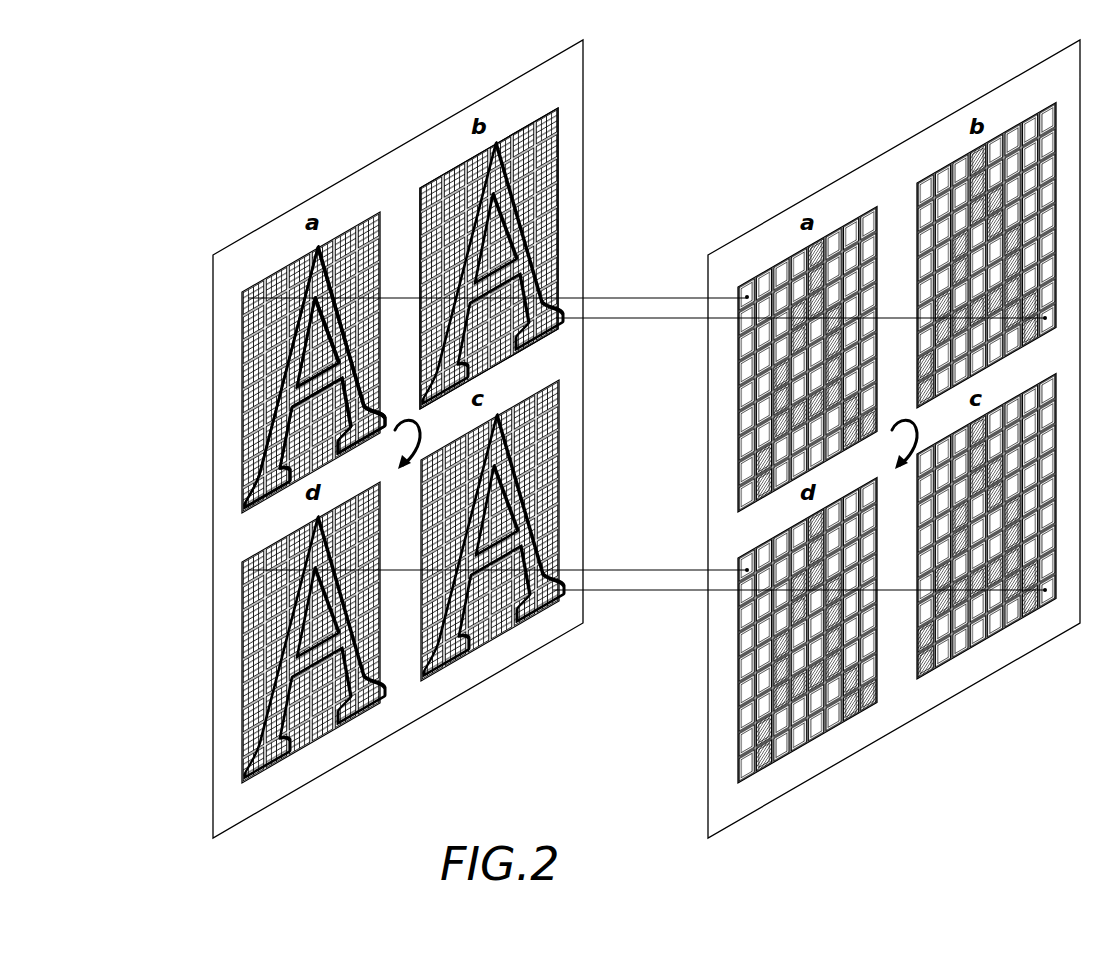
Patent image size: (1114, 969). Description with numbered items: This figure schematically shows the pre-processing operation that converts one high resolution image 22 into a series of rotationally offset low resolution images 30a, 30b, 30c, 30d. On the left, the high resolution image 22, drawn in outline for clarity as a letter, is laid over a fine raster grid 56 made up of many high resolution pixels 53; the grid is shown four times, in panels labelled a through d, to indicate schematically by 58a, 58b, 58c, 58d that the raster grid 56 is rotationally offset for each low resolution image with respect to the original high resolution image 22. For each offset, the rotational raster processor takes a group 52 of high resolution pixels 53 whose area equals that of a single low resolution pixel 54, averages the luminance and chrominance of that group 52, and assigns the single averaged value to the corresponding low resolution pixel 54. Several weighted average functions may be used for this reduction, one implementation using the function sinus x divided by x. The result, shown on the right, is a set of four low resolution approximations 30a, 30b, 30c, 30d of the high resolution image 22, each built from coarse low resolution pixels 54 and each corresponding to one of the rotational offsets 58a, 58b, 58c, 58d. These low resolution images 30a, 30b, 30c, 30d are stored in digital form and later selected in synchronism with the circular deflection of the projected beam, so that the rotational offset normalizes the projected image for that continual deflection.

The high resolution image 22 is at (310, 247).
The group of high resolution pixels 52 is at (430, 183).
The high resolution pixels 53 is at (248, 292).
The low resolution pixel 54 is at (747, 297).
The raster grid 56 is at (545, 110).
The rotational offset of raster grid (first) 58a is at (333, 465).
The rotational offset of raster grid (second) 58b is at (483, 372).
The rotational offset of raster grid (third) 58c is at (493, 640).
The rotational offset of raster grid (fourth) 58d is at (314, 742).
The low resolution image (first) 30a is at (830, 465).
The low resolution image (second) 30b is at (984, 372).
The low resolution image (third) 30c is at (988, 640).
The low resolution image (fourth) 30d is at (811, 742).